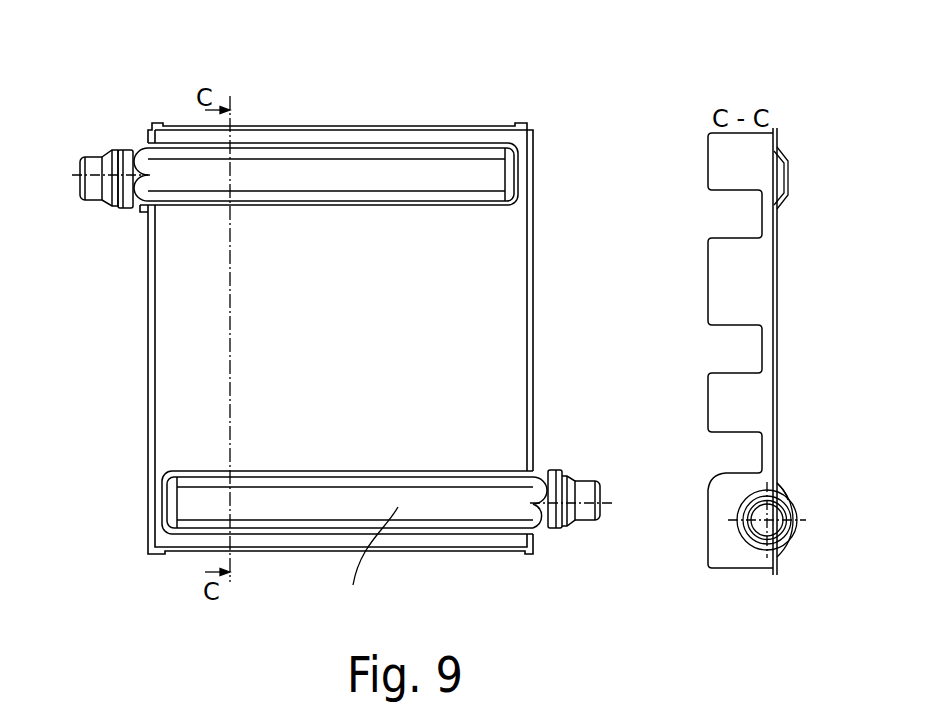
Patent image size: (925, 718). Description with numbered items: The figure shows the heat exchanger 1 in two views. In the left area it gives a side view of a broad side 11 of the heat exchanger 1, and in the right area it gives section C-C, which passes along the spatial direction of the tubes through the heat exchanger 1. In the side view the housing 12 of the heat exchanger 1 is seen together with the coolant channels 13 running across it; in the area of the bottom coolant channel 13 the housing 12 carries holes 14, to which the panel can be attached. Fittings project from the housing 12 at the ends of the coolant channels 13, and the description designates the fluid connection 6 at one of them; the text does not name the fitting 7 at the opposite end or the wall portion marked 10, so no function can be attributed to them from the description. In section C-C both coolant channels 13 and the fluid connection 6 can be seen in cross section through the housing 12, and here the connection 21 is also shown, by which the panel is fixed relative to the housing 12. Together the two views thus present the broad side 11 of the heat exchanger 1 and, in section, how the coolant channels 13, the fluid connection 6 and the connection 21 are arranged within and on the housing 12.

The heat exchanger 1 is at (448, 118).
The fluid connection 6 is at (588, 522).
The connection fitting 7 is at (97, 157).
The side wall 10 is at (535, 235).
The broad side 11 is at (190, 370).
The housing 12 is at (535, 317).
The coolant channel 13 is at (507, 168).
The holes 14 is at (503, 471).
The connection 21 is at (779, 489).